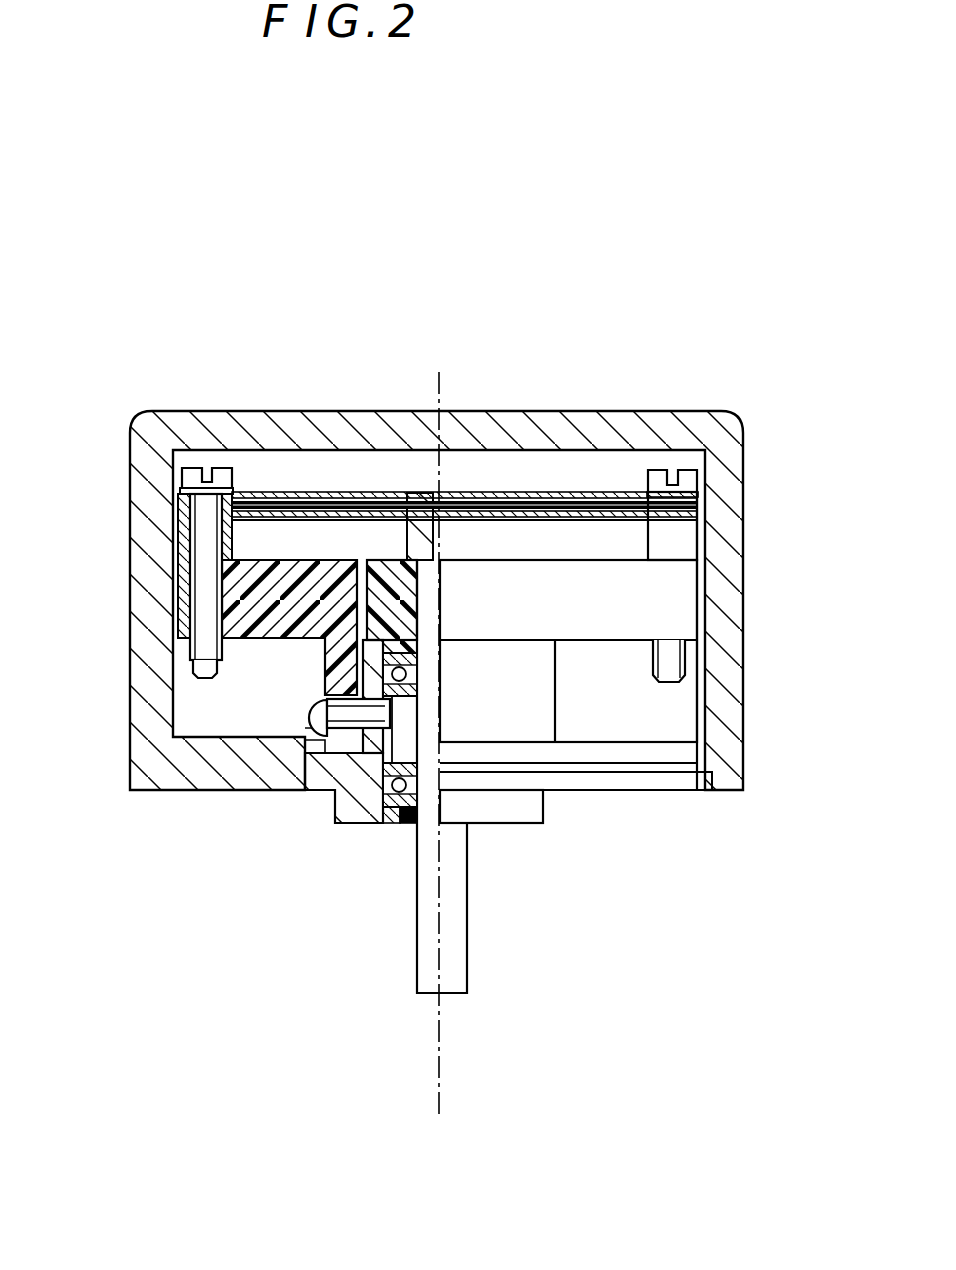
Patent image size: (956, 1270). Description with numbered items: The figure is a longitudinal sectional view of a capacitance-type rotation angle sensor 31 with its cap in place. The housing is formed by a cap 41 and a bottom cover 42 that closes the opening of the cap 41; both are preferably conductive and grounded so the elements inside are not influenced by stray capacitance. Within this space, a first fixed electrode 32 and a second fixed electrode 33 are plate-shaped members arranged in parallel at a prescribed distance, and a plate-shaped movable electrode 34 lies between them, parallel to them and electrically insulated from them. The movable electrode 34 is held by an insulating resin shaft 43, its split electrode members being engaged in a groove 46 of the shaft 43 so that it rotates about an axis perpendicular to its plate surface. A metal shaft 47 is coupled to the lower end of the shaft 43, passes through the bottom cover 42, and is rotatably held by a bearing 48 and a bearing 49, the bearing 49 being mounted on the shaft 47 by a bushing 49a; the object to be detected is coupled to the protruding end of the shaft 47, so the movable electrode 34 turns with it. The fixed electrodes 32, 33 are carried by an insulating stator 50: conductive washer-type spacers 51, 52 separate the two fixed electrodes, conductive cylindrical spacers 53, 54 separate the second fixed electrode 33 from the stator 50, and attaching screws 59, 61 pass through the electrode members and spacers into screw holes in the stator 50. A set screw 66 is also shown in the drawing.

The capacitance-type rotation angle sensor 31 is at (669, 336).
The first fixed electrode 32 is at (527, 500).
The second fixed electrode 33 is at (547, 500).
The movable electrode 34 is at (491, 492).
The cap 41 is at (148, 740).
The bottom cover 42 is at (692, 783).
The shaft 43 is at (405, 494).
The groove 46 is at (418, 494).
The shaft 47 is at (468, 928).
The bearing 48 is at (322, 775).
The bearing 49 is at (383, 820).
The bushing 49a is at (397, 820).
The stator 50 is at (667, 623).
The washer-type spacer 51 is at (178, 509).
The washer-type spacer 52 is at (686, 506).
The cylindrical spacer 53 is at (180, 540).
The cylindrical spacer 54 is at (680, 540).
The attaching screw 59 is at (213, 468).
The attaching screw 61 is at (690, 470).
The set screw 66 is at (305, 718).